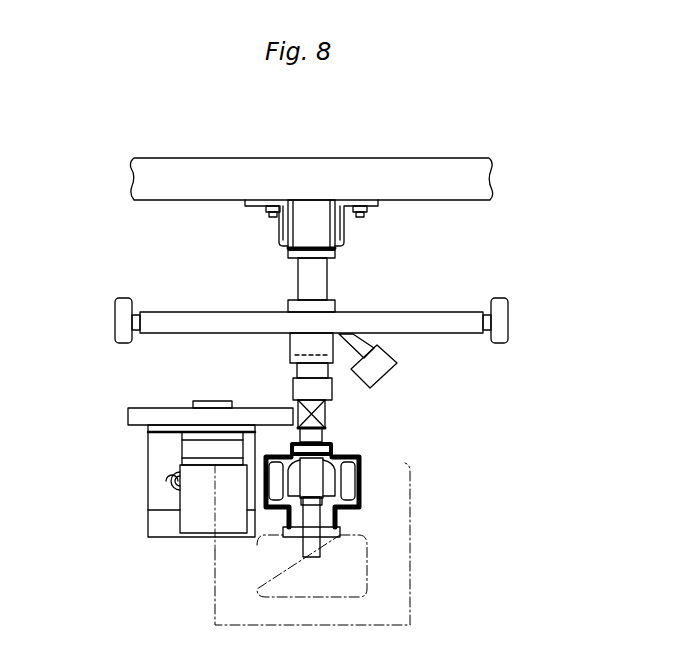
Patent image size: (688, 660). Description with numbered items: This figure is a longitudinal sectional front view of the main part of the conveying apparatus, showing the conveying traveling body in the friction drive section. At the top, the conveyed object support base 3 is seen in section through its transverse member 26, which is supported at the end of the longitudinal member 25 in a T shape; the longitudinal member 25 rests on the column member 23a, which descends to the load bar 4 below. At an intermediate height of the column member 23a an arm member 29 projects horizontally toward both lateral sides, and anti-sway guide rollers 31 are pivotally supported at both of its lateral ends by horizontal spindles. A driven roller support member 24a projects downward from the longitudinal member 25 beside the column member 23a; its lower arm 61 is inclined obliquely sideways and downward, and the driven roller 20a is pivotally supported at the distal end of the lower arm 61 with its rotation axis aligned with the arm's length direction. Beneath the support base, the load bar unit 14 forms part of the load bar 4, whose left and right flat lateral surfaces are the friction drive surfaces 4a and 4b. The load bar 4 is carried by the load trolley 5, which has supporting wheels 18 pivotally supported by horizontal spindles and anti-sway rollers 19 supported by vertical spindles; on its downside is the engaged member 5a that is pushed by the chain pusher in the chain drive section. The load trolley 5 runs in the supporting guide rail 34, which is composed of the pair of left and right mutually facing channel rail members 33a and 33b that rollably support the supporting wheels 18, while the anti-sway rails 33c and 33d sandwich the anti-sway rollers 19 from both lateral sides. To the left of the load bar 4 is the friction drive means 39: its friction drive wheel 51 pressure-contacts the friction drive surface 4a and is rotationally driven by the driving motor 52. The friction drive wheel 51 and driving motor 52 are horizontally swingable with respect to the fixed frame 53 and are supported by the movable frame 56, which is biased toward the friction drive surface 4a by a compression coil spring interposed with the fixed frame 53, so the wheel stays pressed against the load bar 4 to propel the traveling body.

The conveyed object support base 3 is at (322, 154).
The transverse member 26 is at (251, 180).
The longitudinal member 25 is at (310, 205).
The column member 23a is at (300, 283).
The arm member 29 is at (315, 295).
The anti-sway guide roller 31 is at (122, 322).
The load bar unit 14 is at (296, 362).
The driven roller support member 24a is at (404, 327).
The lower arm 61 is at (366, 346).
The driven roller 20a is at (385, 365).
The load bar 4 is at (342, 387).
The friction drive surface 4a is at (295, 412).
The friction drive surface 4b is at (330, 426).
The anti-sway roller 19 is at (292, 445).
The friction drive means 39 is at (174, 477).
The friction drive wheel 51 is at (137, 415).
The fixed frame 53 is at (175, 477).
The anti-sway rail 33c is at (237, 448).
The movable frame 56 is at (165, 475).
The driving motor 52 is at (195, 525).
The anti-sway rail 33d is at (338, 450).
The channel rail member 33b is at (335, 519).
The channel rail member 33a is at (262, 480).
The supporting wheel 18 is at (277, 500).
The supporting guide rail 34 is at (367, 505).
The load trolley 5 is at (361, 544).
The engaged member 5a is at (341, 530).